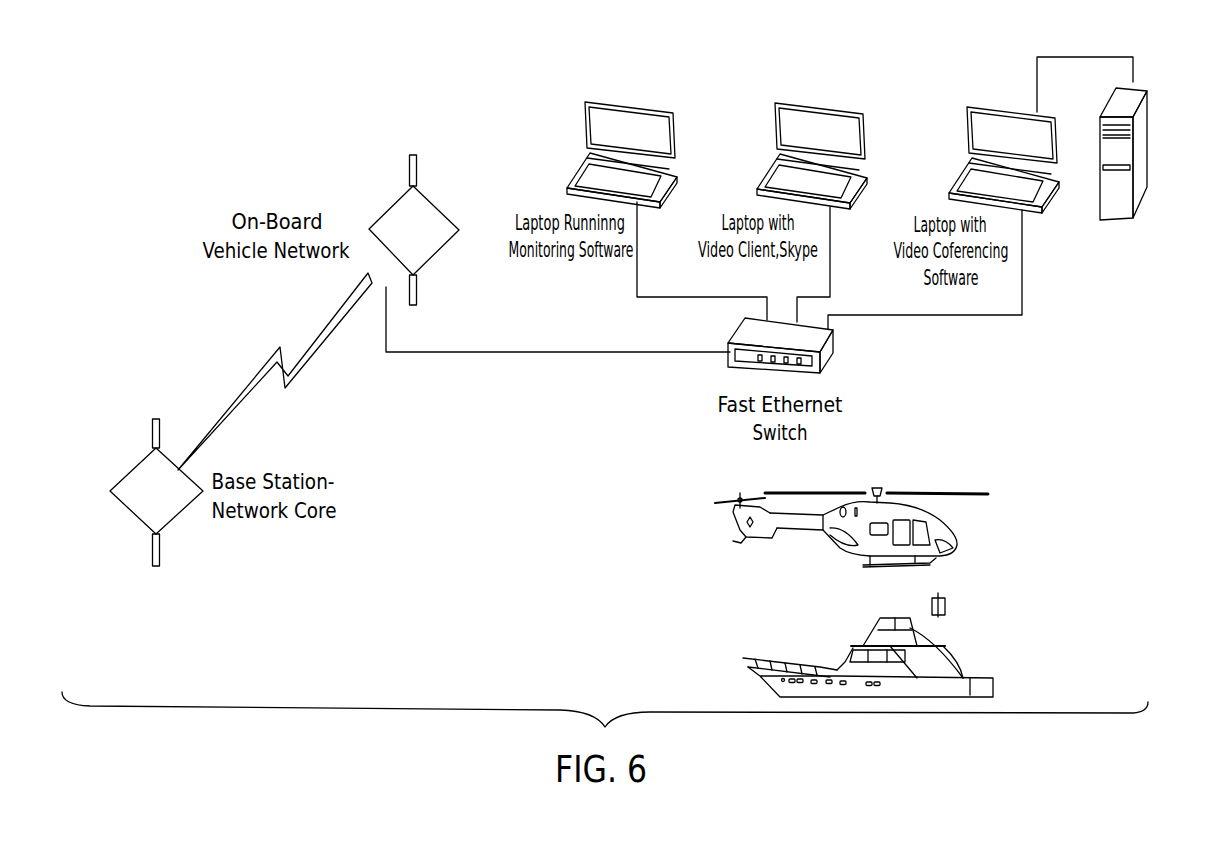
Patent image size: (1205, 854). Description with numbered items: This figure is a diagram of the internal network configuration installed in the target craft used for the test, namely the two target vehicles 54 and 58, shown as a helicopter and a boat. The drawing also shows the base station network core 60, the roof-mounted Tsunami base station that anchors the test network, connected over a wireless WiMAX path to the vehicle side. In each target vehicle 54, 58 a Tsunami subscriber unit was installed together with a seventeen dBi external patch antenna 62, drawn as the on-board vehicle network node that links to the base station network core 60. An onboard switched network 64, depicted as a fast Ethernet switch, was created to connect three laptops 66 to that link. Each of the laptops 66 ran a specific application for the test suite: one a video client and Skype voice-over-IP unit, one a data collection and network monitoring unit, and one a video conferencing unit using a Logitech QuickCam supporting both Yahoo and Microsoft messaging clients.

The target vehicle 54 is at (957, 542).
The target vehicle 58 is at (933, 667).
The base station network core 60 is at (138, 474).
The external patch antenna 62 is at (398, 208).
The onboard switched network 64 is at (830, 347).
The laptops 66 is at (640, 122).